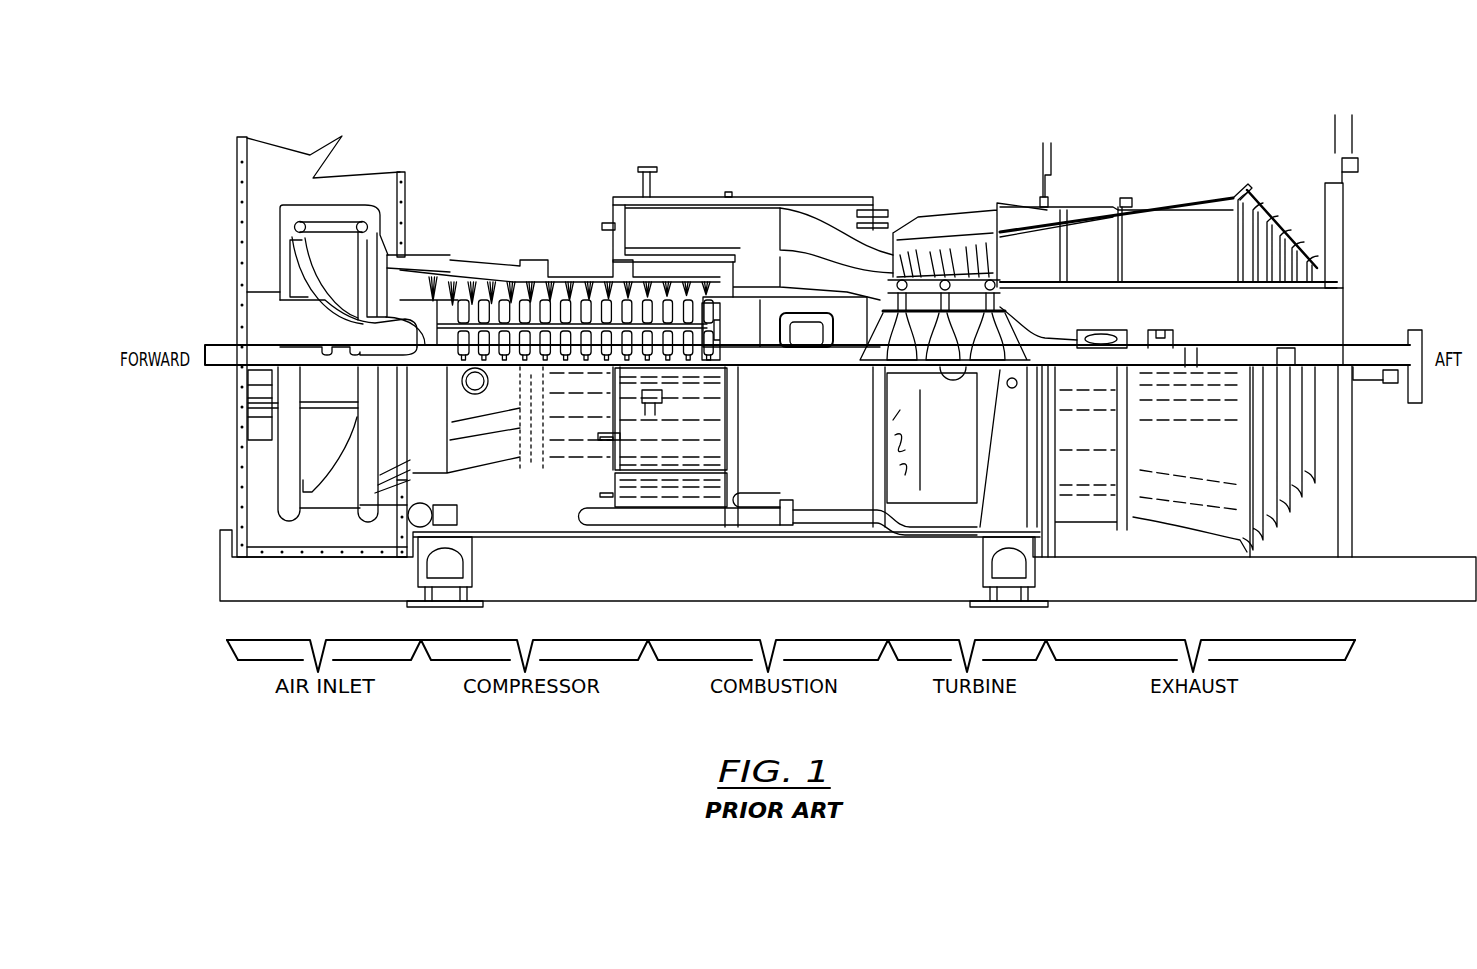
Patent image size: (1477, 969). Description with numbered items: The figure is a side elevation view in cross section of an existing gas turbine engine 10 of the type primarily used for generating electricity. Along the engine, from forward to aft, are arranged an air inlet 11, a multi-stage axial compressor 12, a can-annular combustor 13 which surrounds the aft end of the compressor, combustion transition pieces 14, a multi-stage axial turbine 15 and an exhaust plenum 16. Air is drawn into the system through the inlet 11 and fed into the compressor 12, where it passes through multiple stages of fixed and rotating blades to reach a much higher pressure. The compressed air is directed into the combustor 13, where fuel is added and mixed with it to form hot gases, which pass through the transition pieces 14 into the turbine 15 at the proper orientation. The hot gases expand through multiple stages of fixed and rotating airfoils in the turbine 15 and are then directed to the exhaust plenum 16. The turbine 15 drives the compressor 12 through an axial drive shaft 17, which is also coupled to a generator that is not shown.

The gas turbine engine 10 is at (948, 60).
The air inlet 11 is at (354, 178).
The multi-stage axial compressor 12 is at (488, 254).
The can-annular combustor 13 is at (695, 195).
The combustion transition pieces 14 is at (805, 228).
The multi-stage axial turbine 15 is at (950, 209).
The exhaust plenum 16 is at (1289, 196).
The axial drive shaft 17 is at (1374, 340).